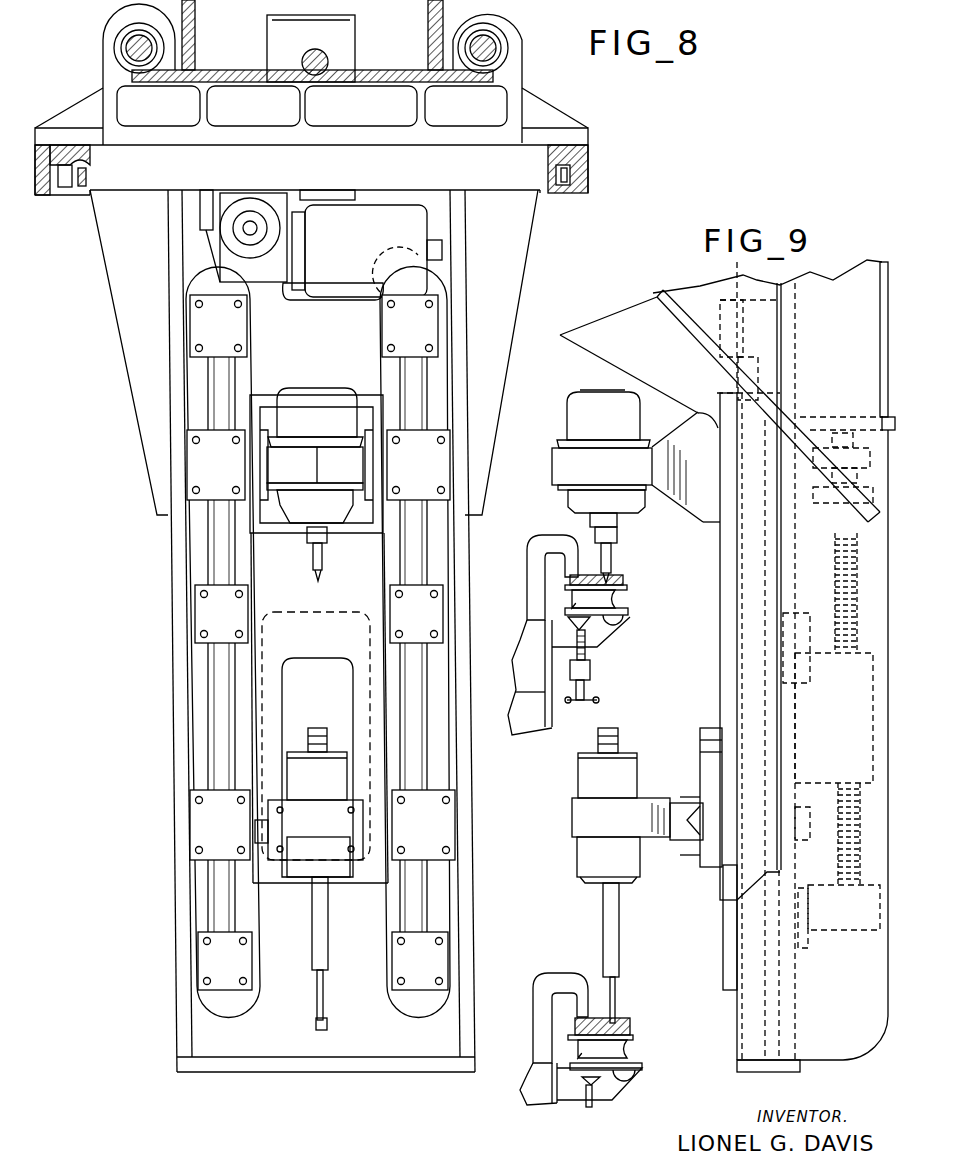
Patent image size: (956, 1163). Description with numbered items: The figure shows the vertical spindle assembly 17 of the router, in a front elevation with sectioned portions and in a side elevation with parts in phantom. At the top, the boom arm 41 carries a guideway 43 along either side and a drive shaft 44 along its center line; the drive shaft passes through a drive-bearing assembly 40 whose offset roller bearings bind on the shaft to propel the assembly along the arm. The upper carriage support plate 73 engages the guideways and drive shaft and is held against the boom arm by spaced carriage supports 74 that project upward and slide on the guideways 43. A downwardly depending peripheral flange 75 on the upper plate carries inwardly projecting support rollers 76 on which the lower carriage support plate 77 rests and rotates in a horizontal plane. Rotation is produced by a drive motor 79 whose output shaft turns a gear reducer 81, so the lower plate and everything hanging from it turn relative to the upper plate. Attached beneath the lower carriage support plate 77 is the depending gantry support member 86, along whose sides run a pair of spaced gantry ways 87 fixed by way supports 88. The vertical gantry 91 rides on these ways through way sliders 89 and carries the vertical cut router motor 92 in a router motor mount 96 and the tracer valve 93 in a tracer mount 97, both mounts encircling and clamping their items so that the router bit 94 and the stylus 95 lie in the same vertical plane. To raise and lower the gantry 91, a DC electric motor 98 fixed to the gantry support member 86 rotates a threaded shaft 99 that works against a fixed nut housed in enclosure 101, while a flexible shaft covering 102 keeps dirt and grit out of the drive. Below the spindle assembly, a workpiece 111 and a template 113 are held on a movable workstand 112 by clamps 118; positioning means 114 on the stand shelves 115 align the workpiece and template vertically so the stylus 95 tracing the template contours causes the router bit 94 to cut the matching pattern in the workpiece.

In FIG. 8, the vertical spindle assembly 17 is at (130, 467).
In FIG. 8, the drive-bearing assembly 40 is at (270, 58).
In FIG. 8, the boom arm 41 is at (216, 22).
In FIG. 8, the guideway 43 is at (128, 50).
In FIG. 8, the drive shaft 44 is at (331, 52).
In FIG. 8, the upper carriage support plate 73 is at (562, 128).
In FIG. 8, the carriage support 74 is at (110, 22).
In FIG. 8, the peripheral flange 75 is at (592, 166).
In FIG. 8, the support roller 76 is at (556, 178).
In FIG. 8, the lower carriage support plate 77 is at (588, 152).
In FIG. 8, the drive motor 79 is at (377, 249).
In FIG. 8, the gear reducer 81 is at (284, 270).
In FIG. 8, the gantry support member 86 is at (470, 242).
In FIG. 9, the gantry support member 86 is at (660, 334).
In FIG. 8, the gantry way 87 is at (208, 525).
In FIG. 8, the way support 88 is at (195, 308).
In FIG. 9, the way support 88 is at (738, 300).
In FIG. 8, the way slider 89 is at (447, 457).
In FIG. 8, the vertical gantry 91 is at (265, 549).
In FIG. 9, the vertical gantry 91 is at (712, 638).
In FIG. 8, the vertical cut router motor 92 is at (310, 410).
In FIG. 9, the vertical cut router motor 92 is at (588, 418).
In FIG. 8, the tracer valve 93 is at (305, 767).
In FIG. 9, the tracer valve 93 is at (590, 780).
In FIG. 8, the router bit 94 is at (316, 574).
In FIG. 9, the router bit 94 is at (607, 577).
In FIG. 8, the stylus 95 is at (323, 1015).
In FIG. 9, the stylus 95 is at (617, 1012).
In FIG. 8, the router motor mount 96 is at (337, 468).
In FIG. 9, the router motor mount 96 is at (683, 445).
In FIG. 8, the tracer mount 97 is at (350, 838).
In FIG. 9, the tracer mount 97 is at (650, 810).
In FIG. 9, the DC electric motor 98 is at (882, 262).
In FIG. 9, the threaded shaft 99 is at (838, 430).
In FIG. 9, the enclosure 101 is at (818, 657).
In FIG. 9, the flexible shaft covering 102 is at (835, 543).
In FIG. 9, the workpiece 111 is at (570, 578).
In FIG. 9, the workstand 112 is at (530, 700).
In FIG. 9, the template 113 is at (575, 1023).
In FIG. 9, the positioning means 114 is at (605, 601).
In FIG. 9, the stand shelf 115 is at (612, 615).
In FIG. 9, the clamp 118 is at (552, 542).